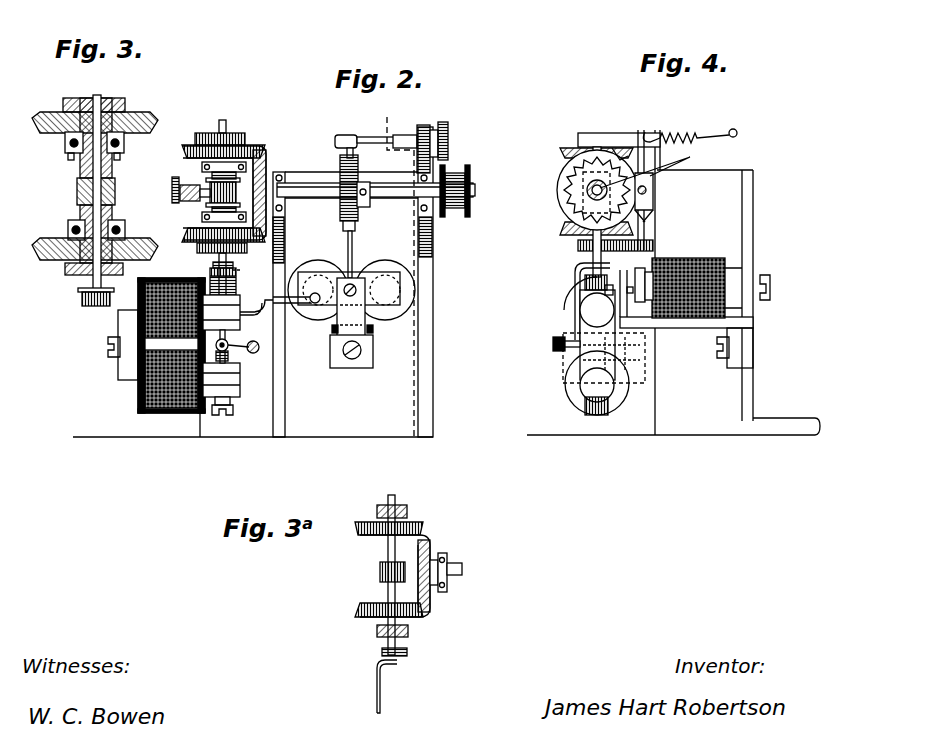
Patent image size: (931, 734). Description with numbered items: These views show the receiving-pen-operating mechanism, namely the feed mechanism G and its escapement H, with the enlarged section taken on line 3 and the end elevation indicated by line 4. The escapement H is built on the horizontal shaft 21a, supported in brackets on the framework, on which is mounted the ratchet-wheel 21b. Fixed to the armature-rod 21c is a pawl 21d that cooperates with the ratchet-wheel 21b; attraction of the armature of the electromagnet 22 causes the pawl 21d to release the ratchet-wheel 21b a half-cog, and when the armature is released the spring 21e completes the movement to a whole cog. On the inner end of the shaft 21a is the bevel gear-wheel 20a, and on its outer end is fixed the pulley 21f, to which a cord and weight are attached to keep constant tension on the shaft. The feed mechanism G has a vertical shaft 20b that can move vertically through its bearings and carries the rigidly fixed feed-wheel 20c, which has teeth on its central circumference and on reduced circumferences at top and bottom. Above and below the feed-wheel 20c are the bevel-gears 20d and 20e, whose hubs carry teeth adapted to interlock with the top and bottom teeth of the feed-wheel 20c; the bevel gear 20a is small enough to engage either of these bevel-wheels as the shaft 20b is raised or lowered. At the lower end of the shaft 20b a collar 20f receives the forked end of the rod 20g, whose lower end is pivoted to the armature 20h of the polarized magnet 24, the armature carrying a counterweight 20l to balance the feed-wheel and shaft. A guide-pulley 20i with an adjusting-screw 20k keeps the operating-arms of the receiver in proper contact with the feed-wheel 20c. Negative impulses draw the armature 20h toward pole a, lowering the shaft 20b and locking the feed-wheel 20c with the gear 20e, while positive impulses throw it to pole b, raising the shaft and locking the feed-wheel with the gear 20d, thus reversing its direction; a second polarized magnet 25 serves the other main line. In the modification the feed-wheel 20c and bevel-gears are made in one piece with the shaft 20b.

In FIG. 3, the section line 3 is at (220, 133).
In FIG. 2, the section line 4 is at (376, 282).
In FIG. 3, the feed mechanism G is at (250, 147).
In FIG. 2, the escapement H is at (351, 282).
In FIG. 4, the escapement H is at (673, 282).
In FIG. 3, the pole a is at (254, 354).
In FIG. 3, the pole b is at (230, 343).
In FIG. 3, the bevel gear-wheel 20a is at (267, 163).
In FIG. 3A, the bevel gear-wheel 20a is at (432, 542).
In FIG. 4, the bevel gear-wheel 20a is at (562, 168).
In FIG. 3, the vertical shaft 20b is at (92, 298).
In FIG. 3A, the vertical shaft 20b is at (388, 638).
In FIG. 4, the vertical shaft 20b is at (595, 132).
In FIG. 3, the feed-wheel 20c is at (77, 190).
In FIG. 3A, the feed-wheel 20c is at (371, 571).
In FIG. 3, the bevel-gear 20d is at (133, 118).
In FIG. 3A, the bevel-gear 20d is at (363, 520).
In FIG. 4, the bevel-gear 20d is at (567, 150).
In FIG. 3, the bevel-gear 20e is at (63, 268).
In FIG. 3A, the bevel-gear 20e is at (357, 609).
In FIG. 4, the bevel-gear 20e is at (562, 231).
In FIG. 3, the collar 20f is at (94, 306).
In FIG. 4, the collar 20f is at (633, 272).
In FIG. 3, the rod 20g is at (243, 286).
In FIG. 3A, the rod 20g is at (375, 687).
In FIG. 4, the rod 20g is at (575, 271).
In FIG. 3, the armature 20h is at (238, 370).
In FIG. 4, the armature 20h is at (578, 348).
In FIG. 3, the guide-pulley 20i is at (183, 178).
In FIG. 3, the adjusting-screw 20k is at (172, 190).
In FIG. 2, the counterweight 20l is at (312, 304).
In FIG. 2, the horizontal shaft 21a is at (304, 198).
In FIG. 4, the horizontal shaft 21a is at (657, 167).
In FIG. 2, the ratchet-wheel 21b is at (358, 207).
In FIG. 4, the ratchet-wheel 21b is at (585, 197).
In FIG. 2, the armature-rod 21c is at (348, 245).
In FIG. 4, the armature-rod 21c is at (647, 213).
In FIG. 2, the pawl 21d is at (356, 231).
In FIG. 4, the pawl 21d is at (615, 150).
In FIG. 4, the spring 21e is at (678, 136).
In FIG. 2, the pulley 21f is at (453, 218).
In FIG. 2, the electromagnet 22 is at (351, 314).
In FIG. 4, the electromagnet 22 is at (690, 258).
In FIG. 3, the polarized magnet 24 is at (172, 413).
In FIG. 4, the polarized magnet 24 is at (620, 397).
In FIG. 3, the polarized magnet 25 is at (197, 270).